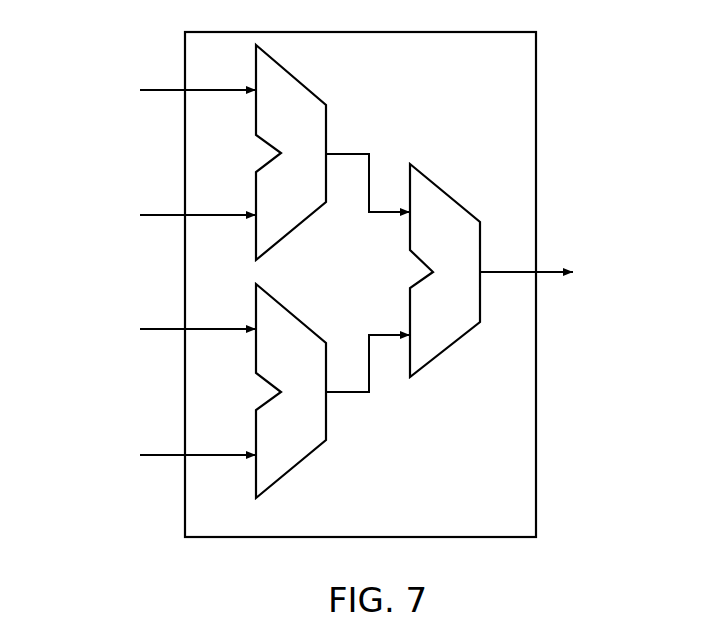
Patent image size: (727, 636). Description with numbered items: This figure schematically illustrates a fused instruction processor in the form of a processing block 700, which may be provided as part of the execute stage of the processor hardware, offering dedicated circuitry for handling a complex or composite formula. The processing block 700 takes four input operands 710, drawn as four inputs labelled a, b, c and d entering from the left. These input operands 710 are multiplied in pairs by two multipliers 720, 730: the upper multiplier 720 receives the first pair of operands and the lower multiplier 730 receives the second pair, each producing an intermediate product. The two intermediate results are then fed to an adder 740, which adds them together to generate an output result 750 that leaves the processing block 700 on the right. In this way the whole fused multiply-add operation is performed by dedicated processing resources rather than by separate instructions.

The processing block 700 is at (536, 472).
The input operands 710 is at (139, 70).
The multiplier 720 is at (295, 232).
The multiplier 730 is at (300, 318).
The adder 740 is at (455, 345).
The output result 750 is at (545, 268).